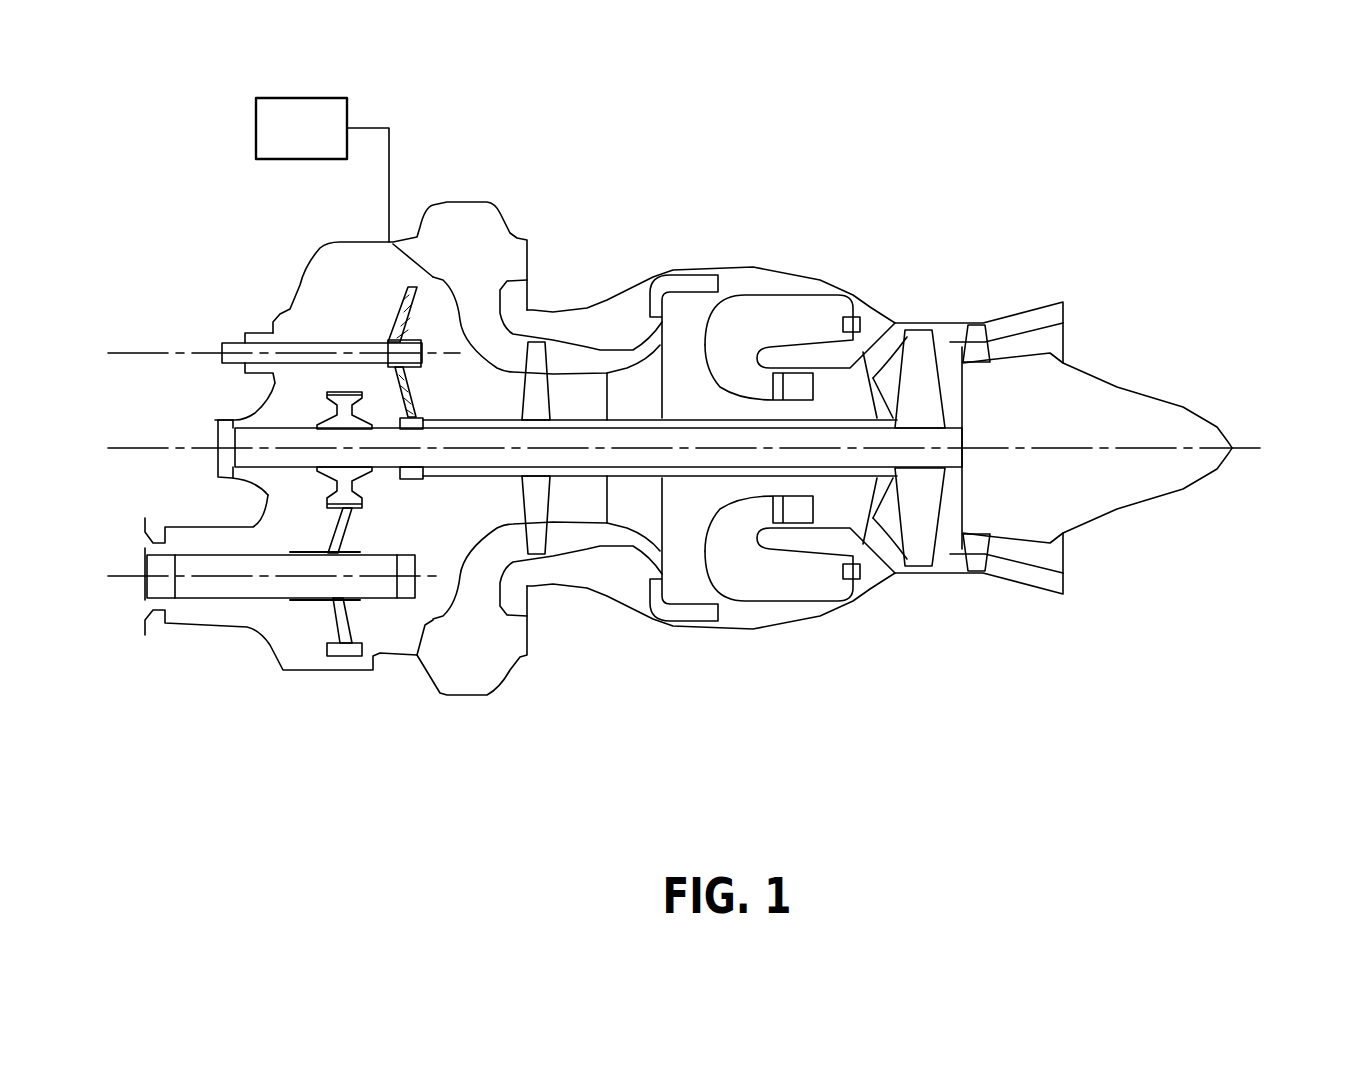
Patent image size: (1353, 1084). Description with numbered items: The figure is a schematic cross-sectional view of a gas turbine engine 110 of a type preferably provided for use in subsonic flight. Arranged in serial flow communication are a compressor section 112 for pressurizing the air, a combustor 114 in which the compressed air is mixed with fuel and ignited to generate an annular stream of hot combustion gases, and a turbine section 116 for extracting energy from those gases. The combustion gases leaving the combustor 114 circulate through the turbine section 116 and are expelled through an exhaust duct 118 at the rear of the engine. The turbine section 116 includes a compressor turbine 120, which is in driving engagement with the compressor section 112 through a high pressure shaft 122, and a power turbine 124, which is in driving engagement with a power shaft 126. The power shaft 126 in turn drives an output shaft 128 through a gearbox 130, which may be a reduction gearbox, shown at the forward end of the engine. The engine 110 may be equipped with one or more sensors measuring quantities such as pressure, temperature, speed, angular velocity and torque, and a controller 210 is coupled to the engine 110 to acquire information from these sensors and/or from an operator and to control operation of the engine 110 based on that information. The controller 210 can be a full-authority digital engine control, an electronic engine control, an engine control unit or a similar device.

The gas turbine engine 110 is at (1108, 190).
The controller 210 is at (322, 170).
The compressor section 112 is at (633, 383).
The high pressure shaft 122 is at (690, 413).
The combustor 114 is at (782, 327).
The compressor turbine 120 is at (850, 517).
The power turbine 124 is at (917, 347).
The turbine section 116 is at (881, 522).
The exhaust duct 118 is at (1067, 325).
The power shaft 126 is at (452, 480).
The output shaft 128 is at (210, 587).
The gearbox 130 is at (385, 520).